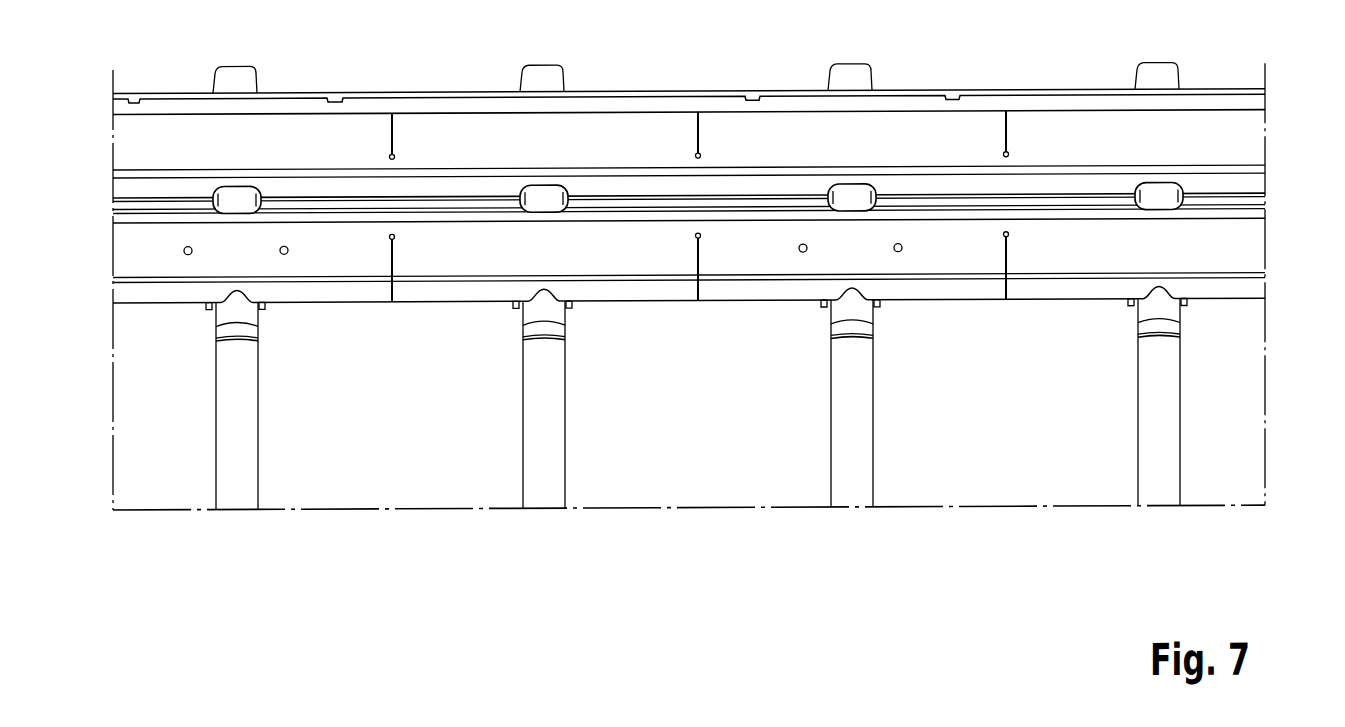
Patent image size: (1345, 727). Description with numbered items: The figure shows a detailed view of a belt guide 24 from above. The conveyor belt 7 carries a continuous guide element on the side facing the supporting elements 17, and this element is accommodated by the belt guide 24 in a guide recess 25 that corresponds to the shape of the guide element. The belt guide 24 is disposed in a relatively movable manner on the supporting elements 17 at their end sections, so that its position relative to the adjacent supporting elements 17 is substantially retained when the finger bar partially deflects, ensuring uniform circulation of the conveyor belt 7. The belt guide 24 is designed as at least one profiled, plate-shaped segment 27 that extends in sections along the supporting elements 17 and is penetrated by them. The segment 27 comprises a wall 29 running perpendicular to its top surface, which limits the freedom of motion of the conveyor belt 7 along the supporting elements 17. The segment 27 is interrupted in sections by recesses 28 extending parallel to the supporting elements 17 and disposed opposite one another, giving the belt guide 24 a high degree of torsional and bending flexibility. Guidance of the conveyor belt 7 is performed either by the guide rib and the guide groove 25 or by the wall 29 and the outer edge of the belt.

The conveyor belt 7 is at (703, 474).
The supporting elements 17 is at (552, 490).
The belt guide 24 is at (1193, 86).
The guide recess 25 is at (288, 203).
The plate-shaped segment 27 is at (1243, 138).
The recesses 28 is at (390, 113).
The wall 29 is at (908, 103).